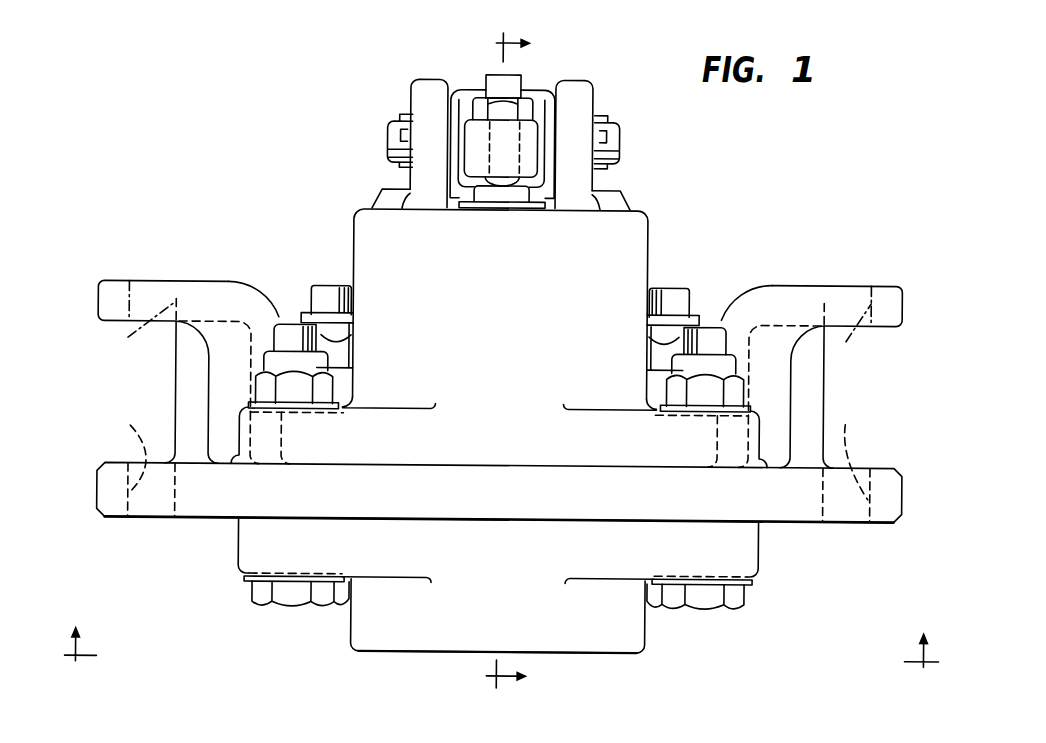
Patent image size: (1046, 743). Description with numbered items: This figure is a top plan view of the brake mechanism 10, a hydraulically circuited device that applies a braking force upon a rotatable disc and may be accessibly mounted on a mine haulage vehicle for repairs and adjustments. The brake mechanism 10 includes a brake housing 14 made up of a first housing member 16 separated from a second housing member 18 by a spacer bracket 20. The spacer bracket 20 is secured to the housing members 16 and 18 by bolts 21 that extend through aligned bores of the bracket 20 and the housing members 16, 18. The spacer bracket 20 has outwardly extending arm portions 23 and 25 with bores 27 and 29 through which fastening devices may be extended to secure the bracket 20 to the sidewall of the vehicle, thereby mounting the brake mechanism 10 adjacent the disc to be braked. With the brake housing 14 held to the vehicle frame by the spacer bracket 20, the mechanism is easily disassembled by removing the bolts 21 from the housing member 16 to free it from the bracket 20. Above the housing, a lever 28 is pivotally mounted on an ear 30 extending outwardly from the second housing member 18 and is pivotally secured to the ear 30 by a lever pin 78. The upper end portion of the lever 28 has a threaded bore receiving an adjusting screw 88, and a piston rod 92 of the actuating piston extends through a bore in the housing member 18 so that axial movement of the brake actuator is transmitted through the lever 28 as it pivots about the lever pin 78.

The brake mechanism 10 is at (272, 221).
The brake housing 14 is at (770, 561).
The first housing member 16 is at (358, 627).
The second housing member 18 is at (353, 226).
The spacer bracket 20 is at (510, 503).
The bolts 21 is at (312, 302).
The arm portion 23 is at (113, 293).
The arm portion 25 is at (882, 293).
The bore 27 is at (139, 397).
The lever 28 is at (463, 95).
The bore 29 is at (855, 402).
The ear 30 is at (584, 93).
The lever pin 78 is at (618, 140).
The adjusting screw 88 is at (507, 87).
The piston rod 92 is at (513, 197).